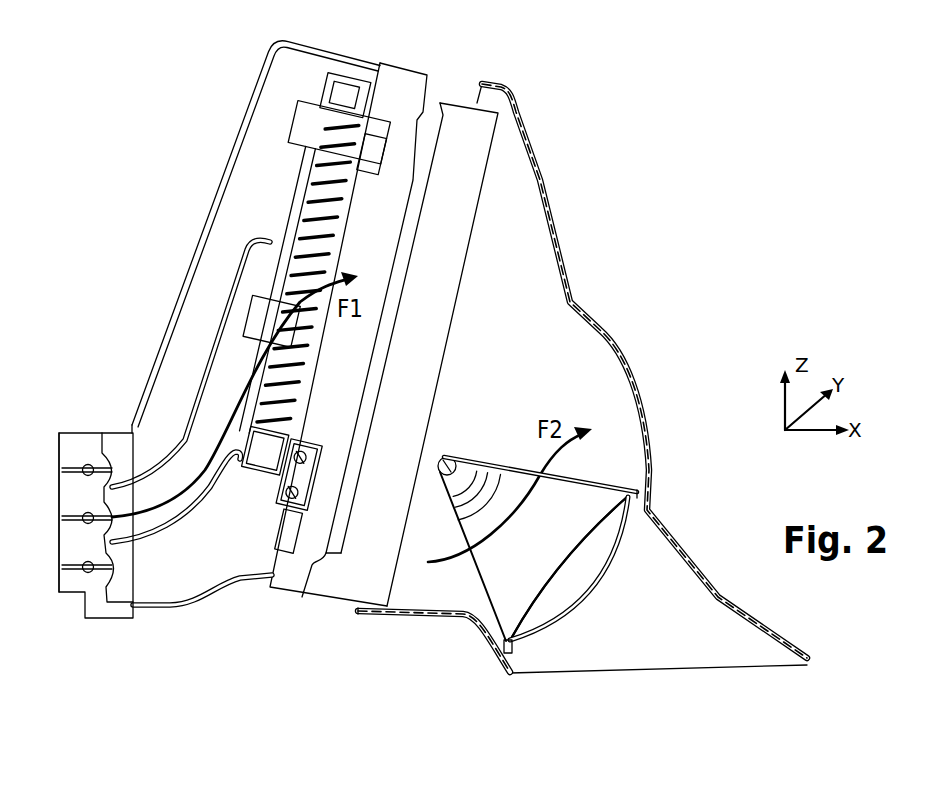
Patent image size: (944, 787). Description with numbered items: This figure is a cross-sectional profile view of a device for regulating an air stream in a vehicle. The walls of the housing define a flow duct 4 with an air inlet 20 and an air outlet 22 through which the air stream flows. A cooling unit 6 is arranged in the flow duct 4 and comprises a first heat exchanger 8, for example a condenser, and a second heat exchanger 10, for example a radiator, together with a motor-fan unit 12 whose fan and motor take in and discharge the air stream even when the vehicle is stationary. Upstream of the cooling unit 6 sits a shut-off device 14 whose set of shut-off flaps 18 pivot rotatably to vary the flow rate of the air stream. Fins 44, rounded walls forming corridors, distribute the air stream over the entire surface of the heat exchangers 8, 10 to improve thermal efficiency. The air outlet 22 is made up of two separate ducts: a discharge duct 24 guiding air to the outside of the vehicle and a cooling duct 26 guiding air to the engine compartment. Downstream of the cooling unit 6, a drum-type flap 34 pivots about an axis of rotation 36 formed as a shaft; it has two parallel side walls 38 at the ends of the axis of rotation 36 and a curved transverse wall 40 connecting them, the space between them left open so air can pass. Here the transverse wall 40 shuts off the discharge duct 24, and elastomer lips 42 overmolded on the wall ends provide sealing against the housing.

The flow duct 4 is at (582, 378).
The cooling unit 6 is at (436, 68).
The first heat exchanger 8 is at (313, 187).
The second heat exchanger 10 is at (377, 203).
The motor-fan unit 12 is at (447, 240).
The shut-off device 14 is at (73, 475).
The shut-off flaps 18 is at (77, 470).
The air inlet 20 is at (59, 500).
The air outlet 22 is at (590, 460).
The discharge duct 24 is at (650, 632).
The cooling duct 26 is at (662, 455).
The flap 34 is at (560, 525).
The axis of rotation 36 is at (447, 457).
The side walls 38 is at (627, 567).
The transverse wall 40 is at (590, 590).
The elastomer lips 42 is at (512, 645).
The fins 44 is at (225, 318).